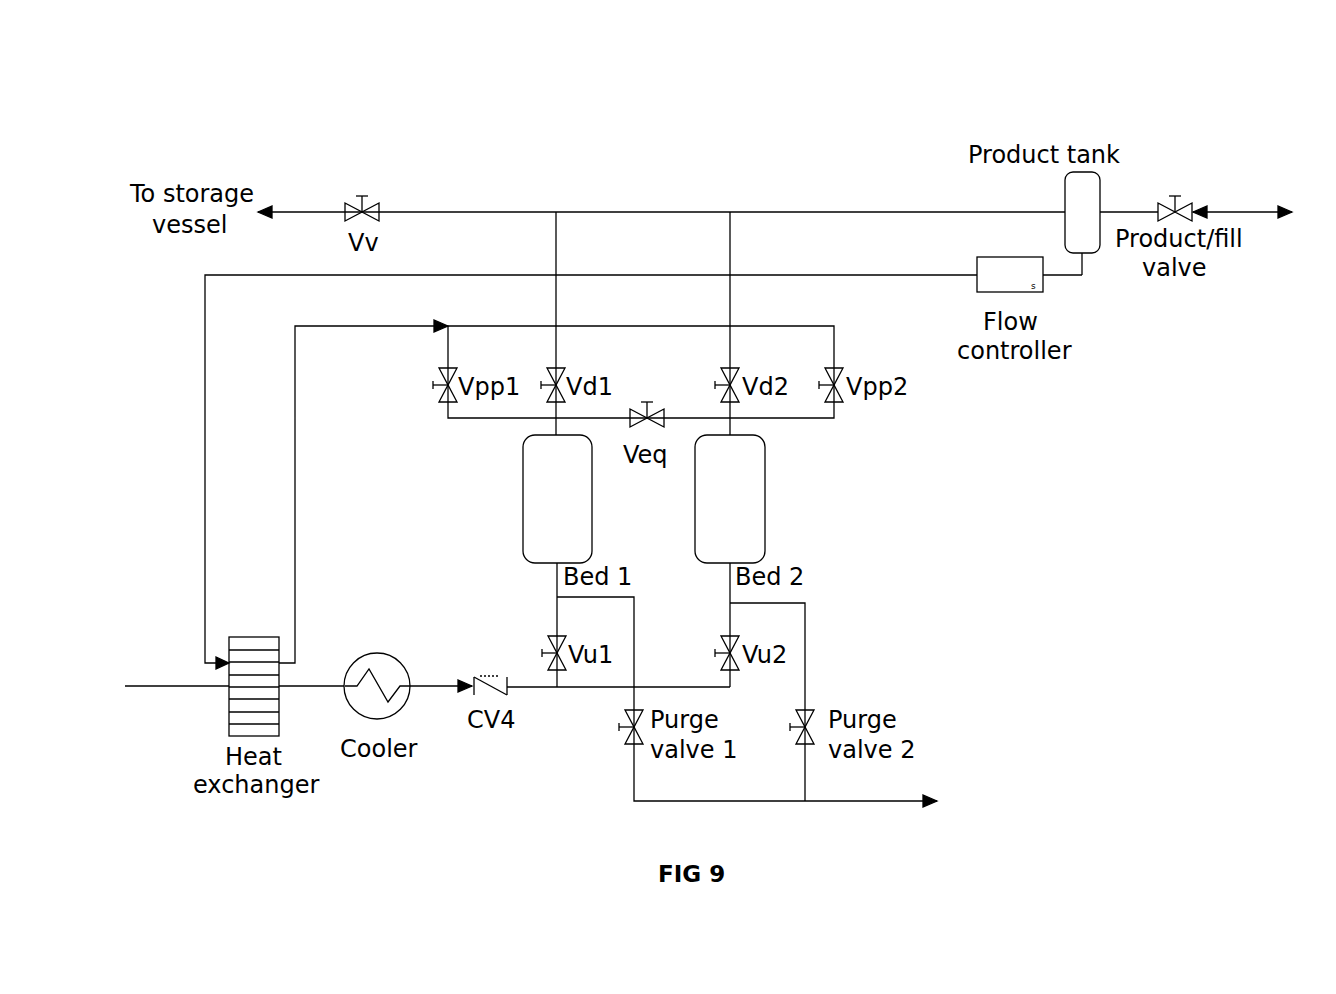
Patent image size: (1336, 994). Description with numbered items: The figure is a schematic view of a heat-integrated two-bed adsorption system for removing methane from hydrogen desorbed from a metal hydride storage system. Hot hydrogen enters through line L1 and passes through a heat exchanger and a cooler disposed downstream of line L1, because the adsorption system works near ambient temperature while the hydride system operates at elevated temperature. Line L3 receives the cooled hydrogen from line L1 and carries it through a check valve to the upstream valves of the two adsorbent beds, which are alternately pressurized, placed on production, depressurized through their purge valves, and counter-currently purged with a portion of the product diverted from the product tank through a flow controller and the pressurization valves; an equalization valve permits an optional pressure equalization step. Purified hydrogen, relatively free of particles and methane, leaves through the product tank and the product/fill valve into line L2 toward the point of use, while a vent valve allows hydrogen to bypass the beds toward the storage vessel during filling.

The line L1 is at (182, 686).
The line L2 is at (1243, 211).
The line L3 is at (440, 686).